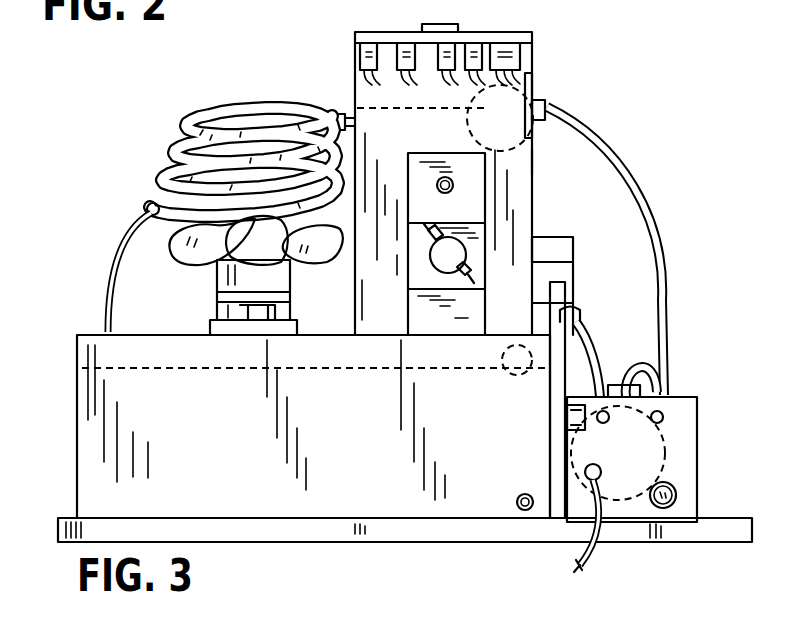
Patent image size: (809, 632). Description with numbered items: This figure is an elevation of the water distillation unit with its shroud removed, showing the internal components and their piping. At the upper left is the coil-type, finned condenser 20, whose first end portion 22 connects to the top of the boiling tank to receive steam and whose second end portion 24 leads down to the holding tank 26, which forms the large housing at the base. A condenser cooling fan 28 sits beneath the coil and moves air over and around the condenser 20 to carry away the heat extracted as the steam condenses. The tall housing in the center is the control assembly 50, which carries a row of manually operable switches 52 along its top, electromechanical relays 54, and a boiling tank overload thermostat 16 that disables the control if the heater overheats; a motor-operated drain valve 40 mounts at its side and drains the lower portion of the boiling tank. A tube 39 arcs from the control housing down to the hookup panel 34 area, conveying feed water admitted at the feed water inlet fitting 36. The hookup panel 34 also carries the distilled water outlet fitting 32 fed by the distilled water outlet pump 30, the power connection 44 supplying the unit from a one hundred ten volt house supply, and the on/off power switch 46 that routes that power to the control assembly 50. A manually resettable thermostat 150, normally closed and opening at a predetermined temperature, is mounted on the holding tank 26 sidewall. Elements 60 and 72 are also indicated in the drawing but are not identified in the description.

The boiling tank overload thermostat 16 is at (453, 187).
The coil-type finned condenser 20 is at (271, 120).
The first end portion 22 is at (352, 110).
The second end portion 24 is at (105, 330).
The holding tank 26 is at (85, 457).
The condenser cooling fan 28 is at (213, 268).
The distilled water outlet pump 30 is at (641, 523).
The distilled water outlet fitting 32 is at (662, 472).
The hookup panel 34 is at (695, 458).
The feed water inlet fitting 36 is at (677, 500).
The tube 39 is at (660, 278).
The motor-operated drain valve 40 is at (575, 252).
The power connection 44 is at (601, 529).
The on/off power switch 46 is at (566, 415).
The control assembly 50 is at (459, 187).
The manually operable switches 52 is at (409, 24).
The electromechanical relays 54 is at (525, 57).
The housing side wall 60 is at (532, 163).
The sensor location 72 is at (520, 345).
The manually resettable thermostat 150 is at (527, 512).